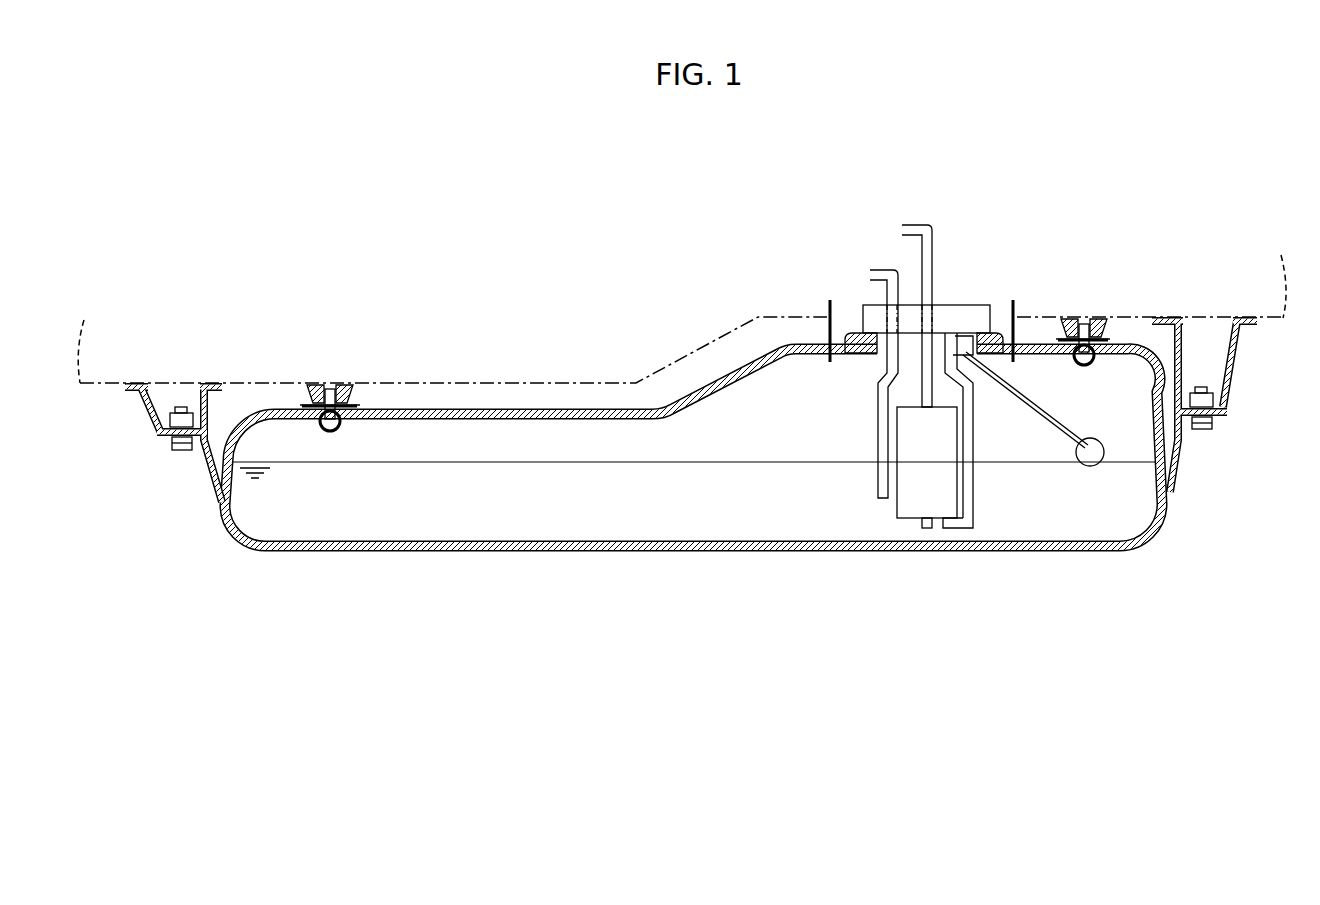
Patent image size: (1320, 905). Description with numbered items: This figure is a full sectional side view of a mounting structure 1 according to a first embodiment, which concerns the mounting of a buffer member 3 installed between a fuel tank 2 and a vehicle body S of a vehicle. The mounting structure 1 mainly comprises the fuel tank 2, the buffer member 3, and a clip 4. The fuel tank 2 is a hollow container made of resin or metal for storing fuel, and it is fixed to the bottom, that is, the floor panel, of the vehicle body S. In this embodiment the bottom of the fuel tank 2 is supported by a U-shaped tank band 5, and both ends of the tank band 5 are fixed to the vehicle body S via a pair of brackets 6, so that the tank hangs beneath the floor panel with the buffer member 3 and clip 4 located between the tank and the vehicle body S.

The mounting structure 1 is at (483, 223).
The fuel tank 2 is at (748, 363).
The buffer member 3 is at (357, 387).
The clip 4 is at (363, 407).
The tank band 5 is at (1175, 468).
The bracket 6 is at (152, 420).
The vehicle body S is at (541, 380).